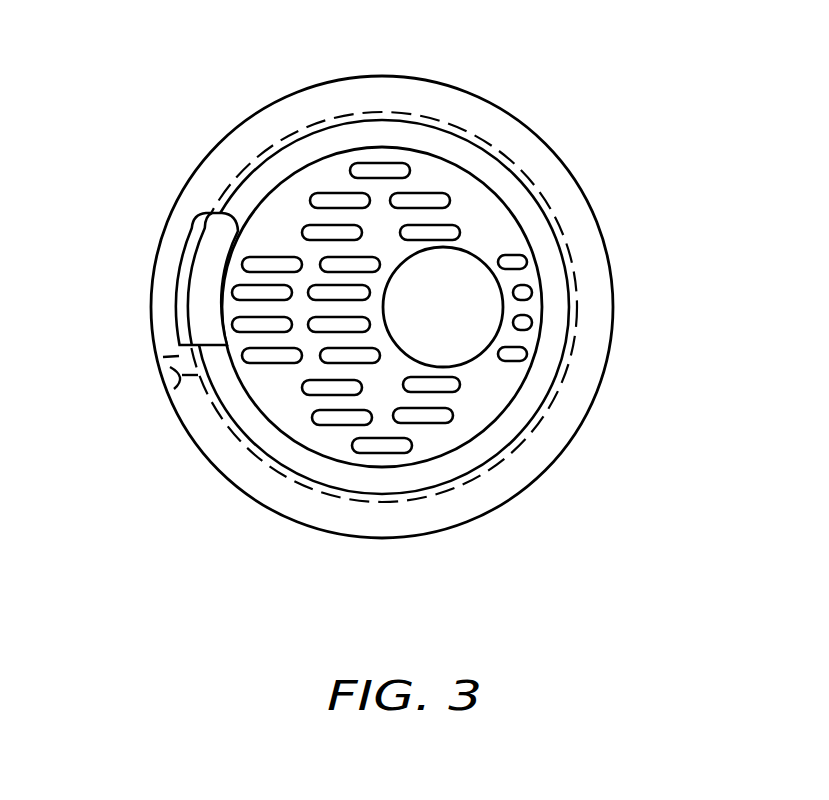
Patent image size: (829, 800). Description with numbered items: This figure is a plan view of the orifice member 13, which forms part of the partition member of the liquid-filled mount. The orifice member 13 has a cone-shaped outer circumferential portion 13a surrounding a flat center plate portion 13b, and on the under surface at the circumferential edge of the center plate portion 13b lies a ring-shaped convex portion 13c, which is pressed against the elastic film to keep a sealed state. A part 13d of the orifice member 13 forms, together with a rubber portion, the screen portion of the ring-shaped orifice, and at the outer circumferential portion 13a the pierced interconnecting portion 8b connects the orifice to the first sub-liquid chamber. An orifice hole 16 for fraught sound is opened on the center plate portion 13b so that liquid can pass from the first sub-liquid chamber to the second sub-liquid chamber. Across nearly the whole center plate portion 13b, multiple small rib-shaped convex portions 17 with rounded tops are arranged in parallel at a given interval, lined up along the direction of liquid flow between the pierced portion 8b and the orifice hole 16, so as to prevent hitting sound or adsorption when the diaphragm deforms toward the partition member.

The orifice member 13 is at (547, 110).
The outer circumferential portion 13a is at (317, 516).
The center plate portion 13b is at (450, 435).
The ring-shaped convex portion 13c is at (578, 357).
The part of the orifice member 13d is at (170, 395).
The orifice hole 16 is at (448, 254).
The convex portions 17 is at (330, 197).
The interconnecting portion 8b is at (185, 257).